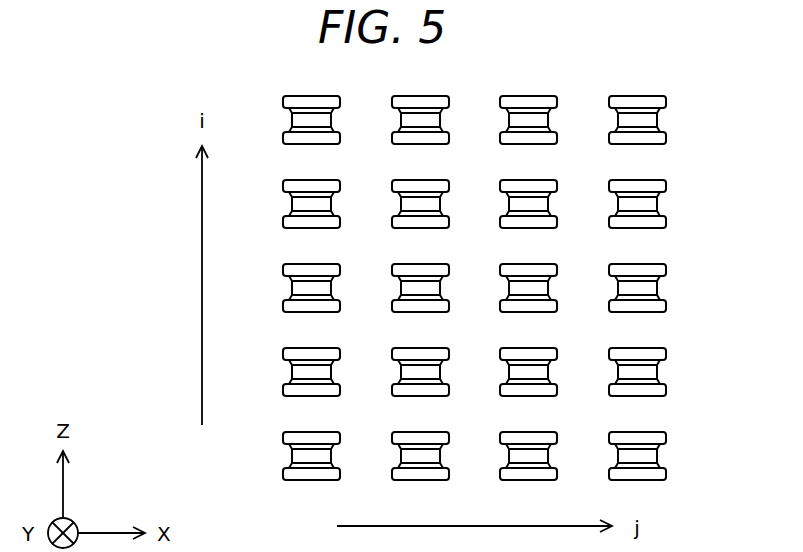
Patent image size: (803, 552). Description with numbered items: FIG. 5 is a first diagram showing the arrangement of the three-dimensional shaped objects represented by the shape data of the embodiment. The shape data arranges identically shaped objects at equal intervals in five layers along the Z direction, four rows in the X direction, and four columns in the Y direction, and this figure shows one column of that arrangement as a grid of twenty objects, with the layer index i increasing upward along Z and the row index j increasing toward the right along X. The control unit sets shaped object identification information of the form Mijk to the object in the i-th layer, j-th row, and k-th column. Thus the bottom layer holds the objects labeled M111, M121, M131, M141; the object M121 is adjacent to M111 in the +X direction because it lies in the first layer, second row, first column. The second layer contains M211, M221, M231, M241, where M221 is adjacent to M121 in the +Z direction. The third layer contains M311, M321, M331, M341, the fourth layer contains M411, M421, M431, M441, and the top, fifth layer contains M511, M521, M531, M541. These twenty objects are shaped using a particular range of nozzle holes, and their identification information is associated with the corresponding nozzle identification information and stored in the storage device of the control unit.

The shaped object identification information M111 is at (302, 433).
The shaped object identification information M121 is at (411, 433).
The shaped object identification information M131 is at (519, 433).
The shaped object identification information M141 is at (628, 433).
The shaped object identification information M211 is at (302, 349).
The shaped object identification information M221 is at (411, 349).
The shaped object identification information M231 is at (519, 349).
The shaped object identification information M241 is at (628, 349).
The shaped object identification information M311 is at (302, 265).
The shaped object identification information M321 is at (411, 265).
The shaped object identification information M331 is at (519, 265).
The shaped object identification information M341 is at (628, 265).
The shaped object identification information M411 is at (302, 181).
The shaped object identification information M421 is at (411, 181).
The shaped object identification information M431 is at (519, 181).
The shaped object identification information M441 is at (628, 181).
The shaped object identification information M511 is at (302, 97).
The shaped object identification information M521 is at (411, 97).
The shaped object identification information M531 is at (519, 97).
The shaped object identification information M541 is at (628, 97).